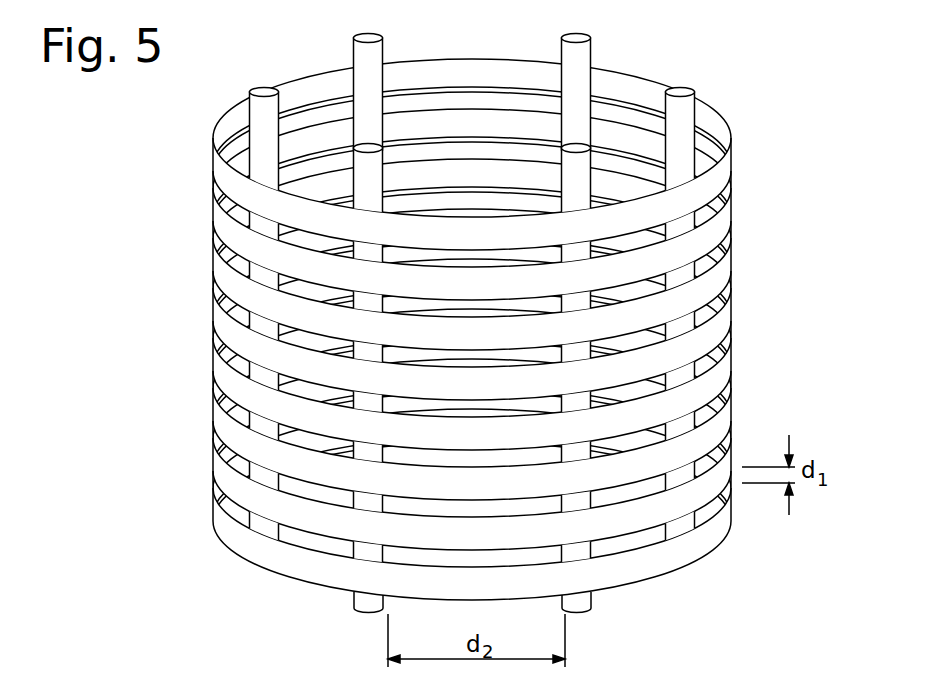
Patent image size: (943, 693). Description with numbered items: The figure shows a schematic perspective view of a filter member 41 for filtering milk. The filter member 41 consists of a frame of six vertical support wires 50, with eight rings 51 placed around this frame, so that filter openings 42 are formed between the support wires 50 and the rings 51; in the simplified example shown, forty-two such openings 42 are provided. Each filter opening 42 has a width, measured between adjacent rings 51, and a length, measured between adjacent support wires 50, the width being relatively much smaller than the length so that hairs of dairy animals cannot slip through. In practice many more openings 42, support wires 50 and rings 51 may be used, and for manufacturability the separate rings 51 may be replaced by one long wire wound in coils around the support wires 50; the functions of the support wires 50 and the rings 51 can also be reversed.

The filter member 41 is at (513, 332).
The filter openings 42 is at (527, 557).
The support wires 50 is at (364, 168).
The rings 51 is at (718, 267).